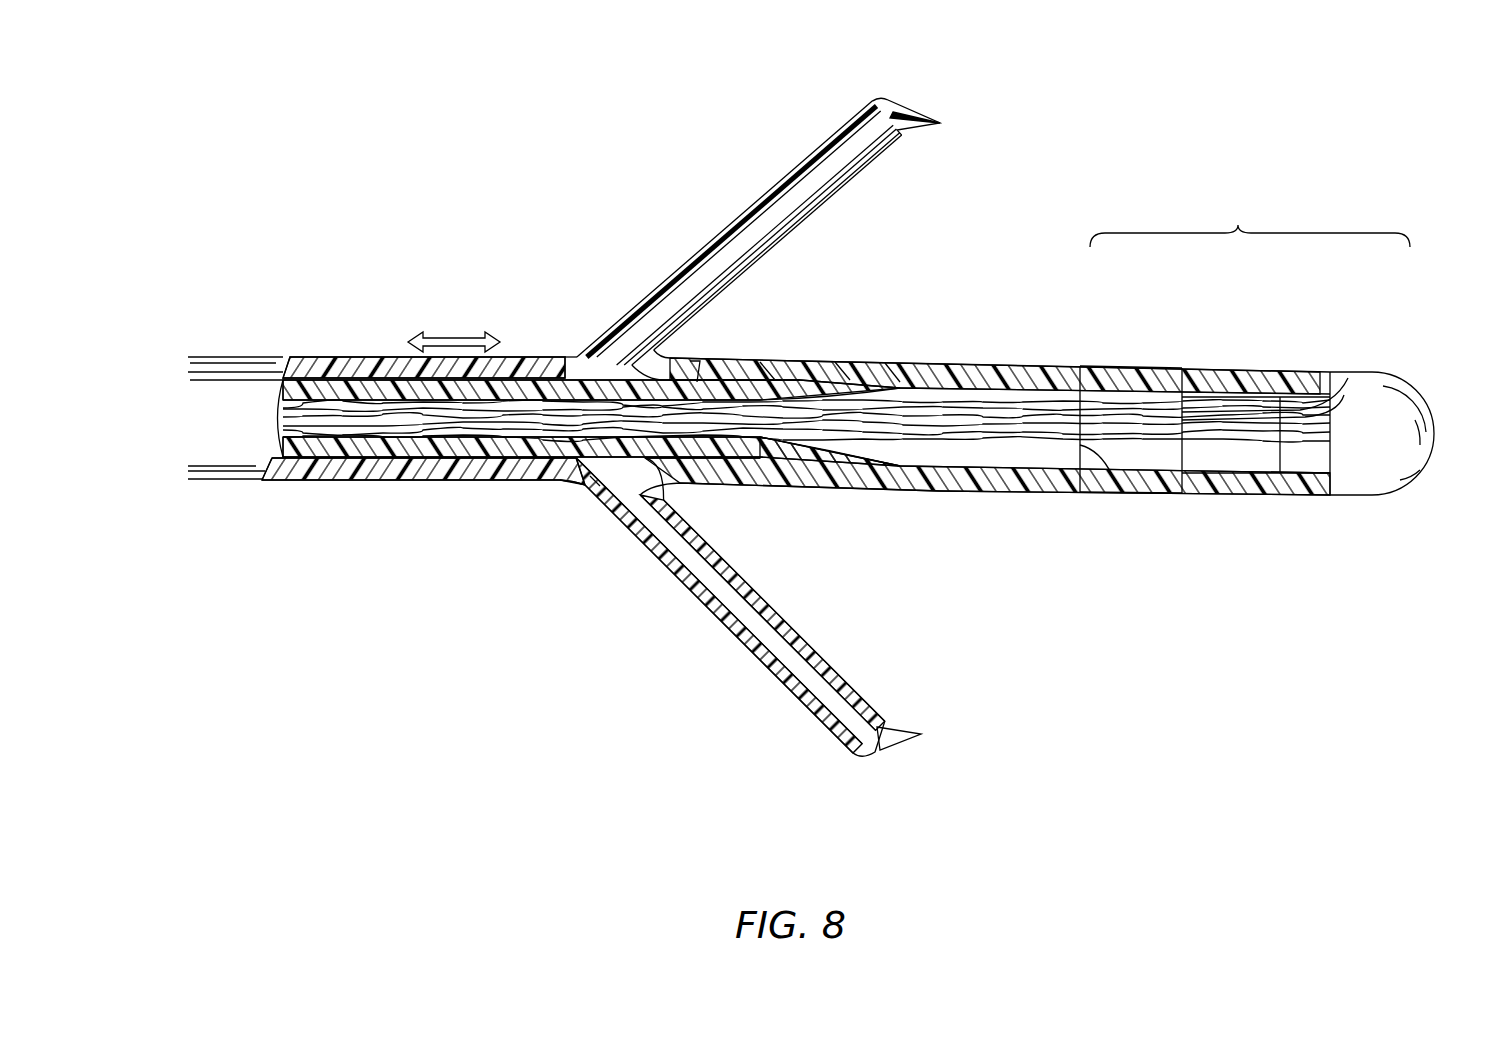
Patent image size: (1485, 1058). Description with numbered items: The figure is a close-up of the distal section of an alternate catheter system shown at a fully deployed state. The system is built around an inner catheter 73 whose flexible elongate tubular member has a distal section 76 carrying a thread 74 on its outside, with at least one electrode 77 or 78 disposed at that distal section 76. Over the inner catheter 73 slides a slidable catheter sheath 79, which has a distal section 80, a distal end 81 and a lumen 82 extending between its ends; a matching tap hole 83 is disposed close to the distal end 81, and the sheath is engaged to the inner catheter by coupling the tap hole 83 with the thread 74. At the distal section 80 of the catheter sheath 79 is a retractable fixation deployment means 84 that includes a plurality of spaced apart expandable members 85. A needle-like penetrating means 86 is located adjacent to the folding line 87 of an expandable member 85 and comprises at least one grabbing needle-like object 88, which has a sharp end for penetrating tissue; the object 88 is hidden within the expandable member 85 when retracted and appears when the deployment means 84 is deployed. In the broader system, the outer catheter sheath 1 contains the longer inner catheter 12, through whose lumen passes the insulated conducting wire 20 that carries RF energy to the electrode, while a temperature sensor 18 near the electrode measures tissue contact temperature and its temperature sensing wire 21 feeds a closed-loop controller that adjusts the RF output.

The catheter sheath 1 is at (313, 352).
The inner catheter 12 is at (400, 453).
The temperature sensor 18 is at (1352, 373).
The insulated conducting wire 20 is at (1052, 437).
The temperature sensing wire 21 is at (1250, 418).
The inner catheter 73 is at (1227, 372).
The thread 74 is at (772, 359).
The distal section 76 is at (1245, 341).
The electrode 77 is at (1363, 375).
The electrode 78 is at (1130, 370).
The slidable catheter sheath 79 is at (600, 518).
The distal section 80 is at (843, 358).
The distal end 81 is at (893, 358).
The lumen 82 is at (603, 474).
The matching tap hole 83 is at (740, 360).
The retractable fixation deployment means 84 is at (735, 645).
The expandable member 85 is at (700, 250).
The needle-like penetrating means 86 is at (903, 723).
The folding line 87 is at (910, 98).
The needle-like object 88 is at (950, 112).